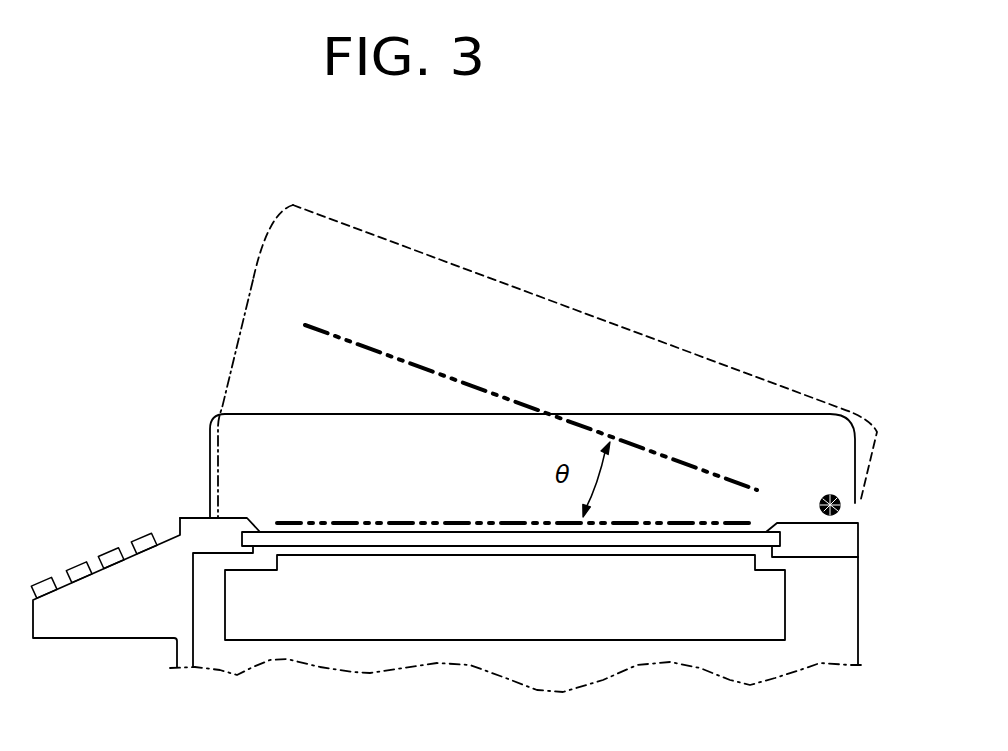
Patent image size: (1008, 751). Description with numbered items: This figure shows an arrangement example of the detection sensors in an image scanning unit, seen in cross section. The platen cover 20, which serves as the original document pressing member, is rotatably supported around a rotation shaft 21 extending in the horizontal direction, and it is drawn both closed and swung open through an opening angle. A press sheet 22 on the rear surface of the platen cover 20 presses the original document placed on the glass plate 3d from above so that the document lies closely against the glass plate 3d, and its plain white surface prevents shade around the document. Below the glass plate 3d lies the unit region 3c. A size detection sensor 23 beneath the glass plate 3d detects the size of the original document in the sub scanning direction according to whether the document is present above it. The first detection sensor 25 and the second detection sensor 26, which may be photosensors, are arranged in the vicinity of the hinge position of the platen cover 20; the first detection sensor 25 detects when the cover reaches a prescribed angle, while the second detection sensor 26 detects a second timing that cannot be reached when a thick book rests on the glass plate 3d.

The platen cover 20 is at (252, 282).
The rotation shaft 21 is at (828, 495).
The press sheet 22 is at (430, 372).
The image reading unit housing 3c is at (547, 602).
The glass plate 3d is at (432, 532).
The size detection sensor 23 is at (724, 570).
The first detection sensor 25 is at (794, 537).
The second detection sensor 26 is at (822, 537).